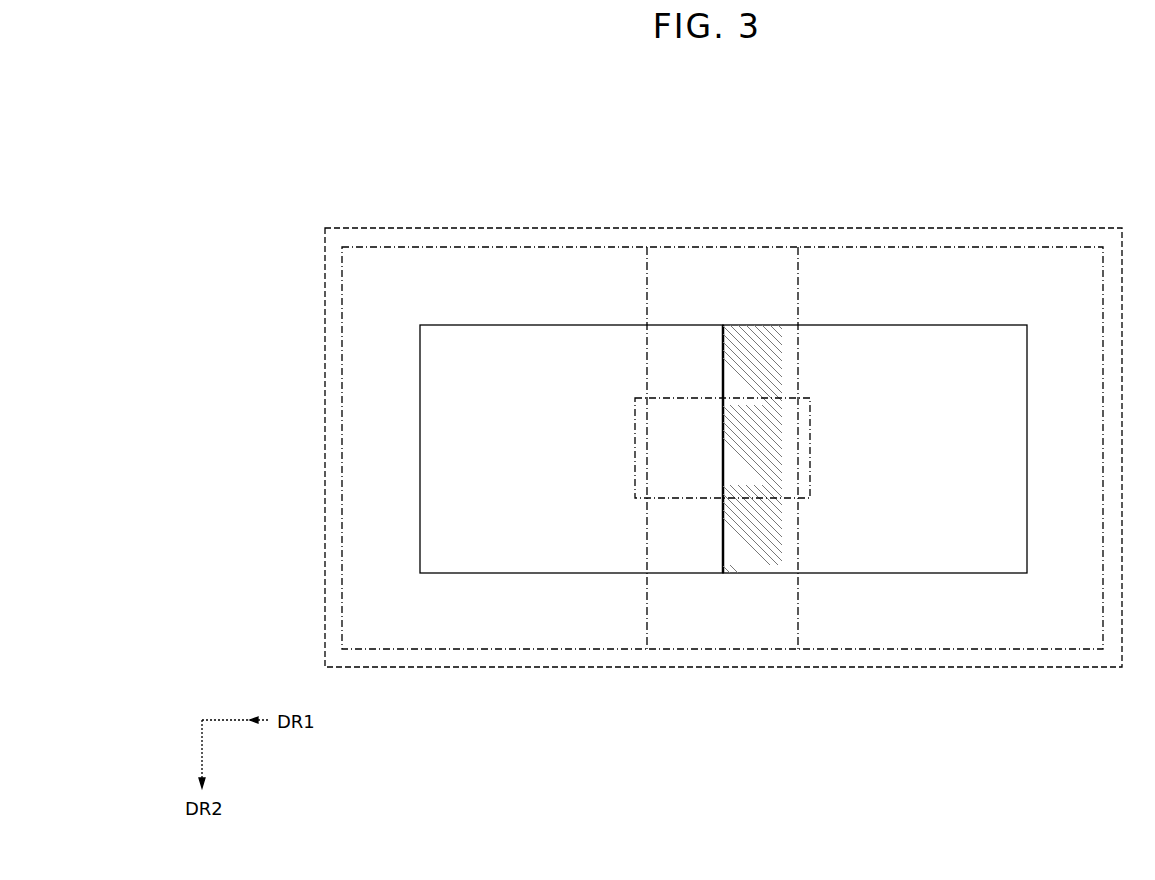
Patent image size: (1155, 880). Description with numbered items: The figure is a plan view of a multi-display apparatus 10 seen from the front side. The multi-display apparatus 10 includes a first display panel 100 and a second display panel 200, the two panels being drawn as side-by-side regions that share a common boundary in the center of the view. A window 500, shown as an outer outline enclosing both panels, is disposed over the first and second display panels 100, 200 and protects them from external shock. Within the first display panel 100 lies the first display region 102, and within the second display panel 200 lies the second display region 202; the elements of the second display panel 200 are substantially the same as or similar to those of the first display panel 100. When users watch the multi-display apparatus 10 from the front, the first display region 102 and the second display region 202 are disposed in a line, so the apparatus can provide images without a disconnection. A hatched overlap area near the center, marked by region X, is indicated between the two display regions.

The multi-display apparatus 10 is at (1005, 165).
The window 500 is at (325, 447).
The first display panel 100 is at (540, 650).
The second display panel 200 is at (935, 650).
The first display region 102 is at (541, 325).
The second display region 202 is at (920, 325).
The overlap region X is at (635, 447).